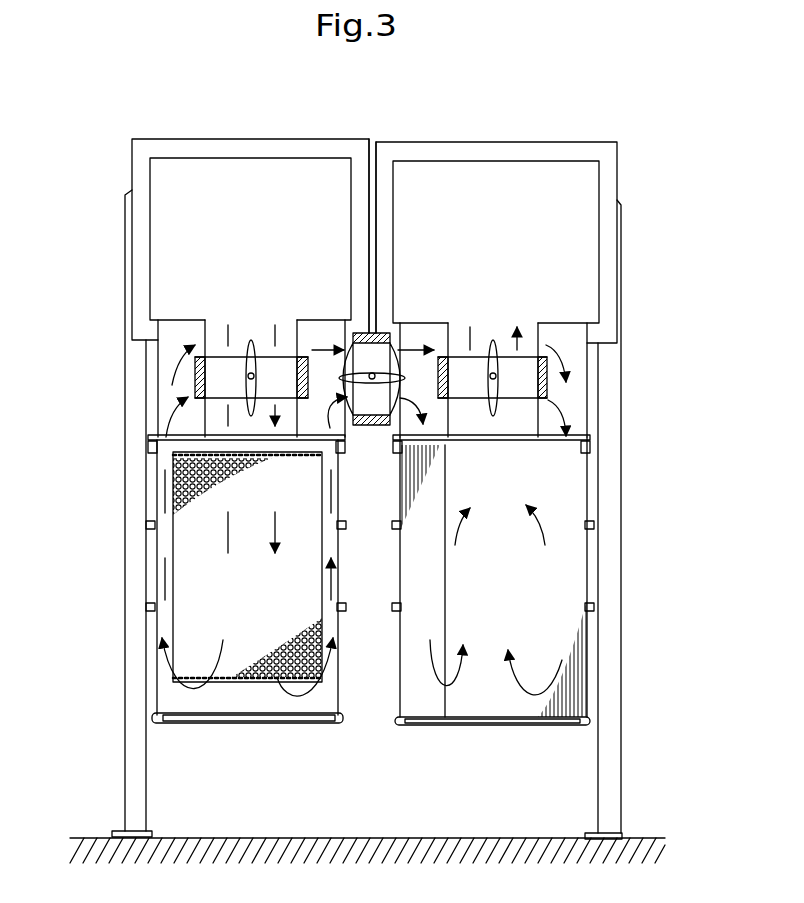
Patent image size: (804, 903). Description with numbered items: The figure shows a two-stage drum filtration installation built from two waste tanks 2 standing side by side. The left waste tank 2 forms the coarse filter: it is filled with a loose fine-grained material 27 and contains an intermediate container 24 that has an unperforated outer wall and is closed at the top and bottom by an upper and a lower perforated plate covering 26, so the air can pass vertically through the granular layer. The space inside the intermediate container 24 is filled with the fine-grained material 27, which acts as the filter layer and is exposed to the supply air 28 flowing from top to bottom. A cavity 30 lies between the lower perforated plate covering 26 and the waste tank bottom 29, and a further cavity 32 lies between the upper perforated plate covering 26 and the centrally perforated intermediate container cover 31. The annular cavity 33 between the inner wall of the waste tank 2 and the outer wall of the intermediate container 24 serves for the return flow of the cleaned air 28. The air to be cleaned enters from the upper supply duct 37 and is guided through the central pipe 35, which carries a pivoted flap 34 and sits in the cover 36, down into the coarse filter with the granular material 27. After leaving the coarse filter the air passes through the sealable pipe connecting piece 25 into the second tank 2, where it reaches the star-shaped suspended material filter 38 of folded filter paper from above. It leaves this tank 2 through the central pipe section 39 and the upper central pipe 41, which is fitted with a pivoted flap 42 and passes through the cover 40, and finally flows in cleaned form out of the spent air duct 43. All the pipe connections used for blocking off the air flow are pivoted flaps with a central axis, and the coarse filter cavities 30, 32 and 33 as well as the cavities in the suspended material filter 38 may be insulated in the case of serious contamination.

The waste tank 2 is at (146, 607).
The intermediate container 24 is at (187, 632).
The sealable pipe connecting piece 25 is at (372, 428).
The perforated plate covering 26 is at (173, 448).
The fine-grained material 27 is at (300, 682).
The supply air 28 is at (226, 547).
The waste tank bottom 29 is at (181, 722).
The cavity 30 is at (221, 718).
The intermediate container cover 31 is at (315, 437).
The cavity 32 is at (318, 452).
The annular cavity 33 is at (338, 676).
The pivoted flap 34 is at (252, 340).
The central pipe 35 is at (204, 340).
The cover 36 is at (152, 382).
The upper supply duct 37 is at (176, 168).
The star-shaped suspended material filter 38 is at (421, 702).
The central pipe section 39 is at (528, 584).
The cover 40 is at (590, 382).
The upper central pipe 41 is at (542, 340).
The pivoted flap 42 is at (494, 340).
The spent air duct 43 is at (590, 196).